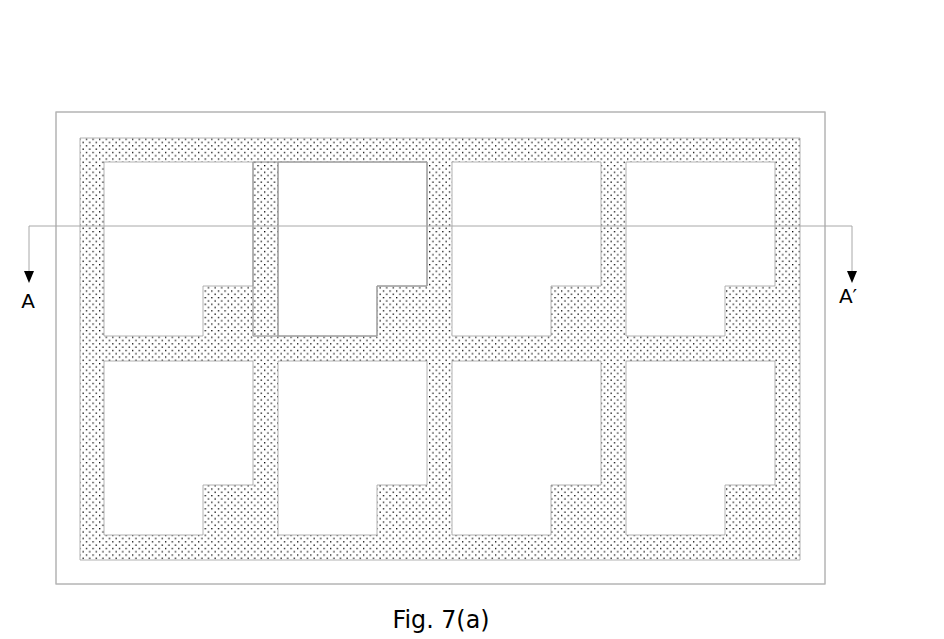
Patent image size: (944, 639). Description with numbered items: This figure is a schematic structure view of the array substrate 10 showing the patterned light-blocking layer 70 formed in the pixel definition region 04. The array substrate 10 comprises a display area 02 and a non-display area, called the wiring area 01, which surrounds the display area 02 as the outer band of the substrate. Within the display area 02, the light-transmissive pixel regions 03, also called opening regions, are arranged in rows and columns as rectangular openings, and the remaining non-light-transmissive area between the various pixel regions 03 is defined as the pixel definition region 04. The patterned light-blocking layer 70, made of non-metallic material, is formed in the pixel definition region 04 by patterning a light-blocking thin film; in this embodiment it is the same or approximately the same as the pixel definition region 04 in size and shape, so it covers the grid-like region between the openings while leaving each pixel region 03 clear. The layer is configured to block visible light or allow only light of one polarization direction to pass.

The array substrate 10 is at (90, 16).
The wiring area 01 is at (535, 132).
The display area 02 is at (292, 61).
The pixel region 03 is at (365, 200).
The pixel definition region 04 is at (259, 196).
The patterned light-blocking layer 70 is at (699, 145).